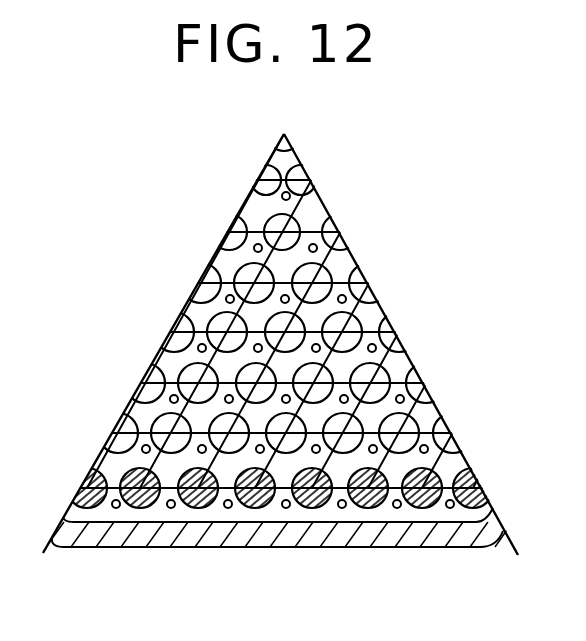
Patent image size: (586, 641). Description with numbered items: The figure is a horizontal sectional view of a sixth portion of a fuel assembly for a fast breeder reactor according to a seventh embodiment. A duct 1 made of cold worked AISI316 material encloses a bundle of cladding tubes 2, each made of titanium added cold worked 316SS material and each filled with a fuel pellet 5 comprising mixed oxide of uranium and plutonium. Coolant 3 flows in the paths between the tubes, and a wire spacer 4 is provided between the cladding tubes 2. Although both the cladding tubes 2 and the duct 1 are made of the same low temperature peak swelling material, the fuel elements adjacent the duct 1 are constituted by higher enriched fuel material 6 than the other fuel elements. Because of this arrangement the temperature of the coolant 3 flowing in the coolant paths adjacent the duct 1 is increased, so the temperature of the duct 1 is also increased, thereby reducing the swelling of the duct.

The duct 1 is at (438, 533).
The cladding tubes 2 is at (268, 500).
The coolant 3 is at (335, 510).
The wire spacer 4 is at (230, 509).
The fuel pellet 5 is at (158, 423).
The higher enriched fuel material 6 is at (257, 504).